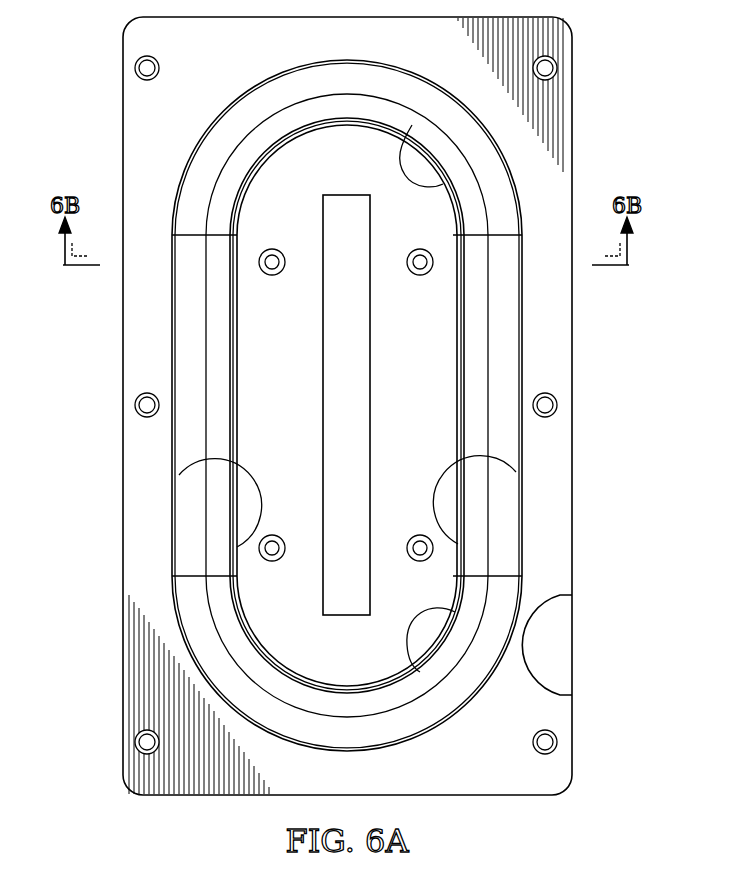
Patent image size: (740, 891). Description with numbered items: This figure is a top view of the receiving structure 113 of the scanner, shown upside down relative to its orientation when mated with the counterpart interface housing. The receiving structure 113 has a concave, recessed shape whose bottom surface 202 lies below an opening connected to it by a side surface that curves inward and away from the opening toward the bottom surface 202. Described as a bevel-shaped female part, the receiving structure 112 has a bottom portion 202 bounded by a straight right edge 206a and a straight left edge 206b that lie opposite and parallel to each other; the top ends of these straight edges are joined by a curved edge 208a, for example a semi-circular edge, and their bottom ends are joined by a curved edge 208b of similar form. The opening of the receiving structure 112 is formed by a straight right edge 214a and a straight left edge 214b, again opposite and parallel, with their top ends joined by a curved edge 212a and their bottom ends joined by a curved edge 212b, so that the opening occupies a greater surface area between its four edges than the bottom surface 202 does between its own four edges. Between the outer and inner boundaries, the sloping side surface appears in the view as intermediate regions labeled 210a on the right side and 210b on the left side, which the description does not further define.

The receiving structure 112 is at (265, 200).
The receiving structure 113 is at (130, 160).
The bottom surface 202 is at (440, 330).
The straight right edge 206a is at (516, 472).
The straight left edge 206b is at (179, 475).
The curved edge 208a is at (412, 125).
The curved edge 208b is at (455, 612).
The first straight rail portion 210a is at (477, 377).
The second straight rail portion 210b is at (215, 338).
The curved edge 212a is at (262, 82).
The curved edge 212b is at (442, 723).
The straight right edge 214a is at (522, 438).
The straight left edge 214b is at (172, 440).